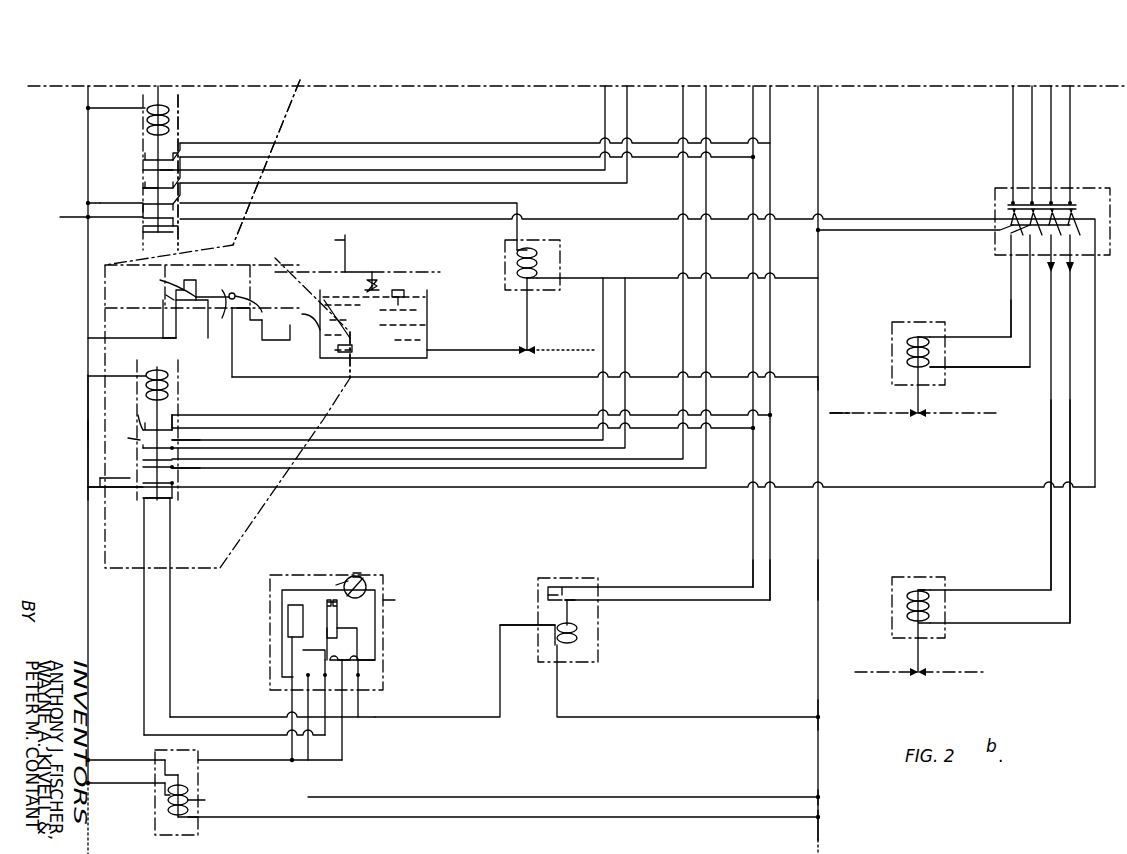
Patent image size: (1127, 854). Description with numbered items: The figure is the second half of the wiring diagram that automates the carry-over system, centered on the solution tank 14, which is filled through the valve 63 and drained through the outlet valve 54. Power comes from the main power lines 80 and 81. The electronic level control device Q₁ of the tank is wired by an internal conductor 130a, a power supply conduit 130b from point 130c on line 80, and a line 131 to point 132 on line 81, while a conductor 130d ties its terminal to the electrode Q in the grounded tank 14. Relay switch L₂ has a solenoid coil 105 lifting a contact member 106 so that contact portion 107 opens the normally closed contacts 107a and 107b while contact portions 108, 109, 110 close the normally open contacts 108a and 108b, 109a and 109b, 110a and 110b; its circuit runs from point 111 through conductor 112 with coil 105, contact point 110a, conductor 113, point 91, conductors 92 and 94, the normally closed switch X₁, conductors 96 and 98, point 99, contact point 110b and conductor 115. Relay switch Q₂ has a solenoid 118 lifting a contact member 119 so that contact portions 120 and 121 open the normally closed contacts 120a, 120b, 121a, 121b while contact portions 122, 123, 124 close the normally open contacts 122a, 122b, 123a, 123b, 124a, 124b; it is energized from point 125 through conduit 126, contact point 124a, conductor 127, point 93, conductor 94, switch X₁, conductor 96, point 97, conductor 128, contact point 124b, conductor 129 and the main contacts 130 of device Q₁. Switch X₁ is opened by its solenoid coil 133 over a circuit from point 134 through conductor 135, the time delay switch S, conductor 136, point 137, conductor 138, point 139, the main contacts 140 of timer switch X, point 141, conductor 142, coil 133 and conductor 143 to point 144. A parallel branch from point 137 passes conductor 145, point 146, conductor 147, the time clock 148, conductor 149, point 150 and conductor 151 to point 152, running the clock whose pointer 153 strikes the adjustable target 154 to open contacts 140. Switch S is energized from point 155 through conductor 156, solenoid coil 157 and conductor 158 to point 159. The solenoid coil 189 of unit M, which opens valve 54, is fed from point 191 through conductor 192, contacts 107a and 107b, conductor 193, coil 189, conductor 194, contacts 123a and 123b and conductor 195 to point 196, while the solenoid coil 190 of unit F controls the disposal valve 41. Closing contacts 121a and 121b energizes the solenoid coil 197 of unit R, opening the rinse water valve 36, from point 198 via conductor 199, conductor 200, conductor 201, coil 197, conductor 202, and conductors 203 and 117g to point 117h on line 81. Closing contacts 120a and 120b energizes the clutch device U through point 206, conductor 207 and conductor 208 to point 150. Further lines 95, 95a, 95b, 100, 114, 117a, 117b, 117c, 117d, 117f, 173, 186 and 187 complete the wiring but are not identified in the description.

The solution tank 14 is at (373, 324).
The wash or teeter water supply valve 36 is at (918, 674).
The effluent disposal valve 41 is at (918, 415).
The outlet valve 54 is at (527, 352).
The valve 63 is at (405, 292).
The main power line 80 is at (88, 430).
The main power line 81 is at (818, 610).
The point 91 is at (770, 143).
The conductor 92 is at (750, 322).
The point 93 is at (770, 415).
The conductor 94 is at (770, 570).
The relay coil 95 is at (565, 648).
The contact 95a is at (578, 603).
The contact 95b is at (553, 600).
The conductor 96 is at (690, 583).
The point 97 is at (753, 428).
The conductor 98 is at (683, 318).
The point 99 is at (753, 157).
The conductor 100 is at (753, 110).
The solenoid coil 105 is at (153, 106).
The contact member 106 is at (160, 105).
The contact portion 107 is at (174, 203).
The normally closed contact 107a is at (142, 214).
The normally closed contact 107b is at (175, 210).
The contact portion 108 is at (158, 234).
The normally open contact 108a is at (143, 228).
The normally open contact 108b is at (175, 226).
The contact portion 109 is at (142, 188).
The normally open contact 109a is at (145, 185).
The normally open contact 109b is at (176, 182).
The contact portion 110 is at (181, 152).
The contact point 110a is at (146, 152).
The contact point 110b is at (176, 150).
The point 111 is at (88, 103).
The conductor 112 is at (95, 107).
The conductor 113 is at (398, 143).
The conductor 114 is at (665, 158).
The conductor 115 is at (178, 104).
The conductor 117a is at (95, 219).
The conductor 117b is at (60, 217).
The conductor 117c is at (405, 221).
The conductor 117d is at (1011, 322).
The conductor 117f is at (945, 370).
The conductor 117g is at (900, 231).
The point 117h is at (818, 232).
The solenoid 118 is at (148, 370).
The contact member 119 is at (168, 372).
The contact portion 120 is at (155, 505).
The normally closed contact 120a is at (143, 502).
The normally closed contact 120b is at (172, 503).
The contact portion 121 is at (175, 498).
The normally closed contact 121a is at (143, 497).
The normally closed contact 121b is at (175, 486).
The contact portion 122 is at (174, 484).
The normally open contact 122a is at (143, 468).
The normally open contact 122b is at (174, 468).
The contact portion 123 is at (143, 460).
The normally open contact 123a is at (143, 447).
The normally open contact 123b is at (174, 446).
The contact portion 124 is at (140, 415).
The contact point 124a is at (143, 422).
The contact point 124b is at (174, 428).
The point 125 is at (88, 375).
The conduit 126 is at (98, 375).
The conductor 127 is at (405, 415).
The conductor 128 is at (668, 428).
The conductor 129 is at (151, 326).
The main contacts 130 is at (196, 280).
The internal conductor 130a is at (263, 297).
The power supply conduit 130b is at (128, 326).
The point 130c is at (88, 338).
The conductor 130d is at (265, 332).
The line 131 is at (665, 377).
The point 132 is at (818, 377).
The solenoid coil 133 is at (555, 640).
The point 134 is at (88, 760).
The conductor 135 is at (138, 745).
The conductor 136 is at (200, 760).
The point 137 is at (292, 760).
The conductor 138 is at (342, 752).
The point 139 is at (340, 675).
The main contacts 140 is at (328, 600).
The point 141 is at (360, 675).
The conductor 142 is at (485, 717).
The conductor 143 is at (722, 717).
The point 144 is at (818, 717).
The conductor 145 is at (292, 735).
The point 146 is at (282, 677).
The conductor 147 is at (285, 620).
The time clock 148 is at (365, 580).
The conductor 149 is at (375, 644).
The point 150 is at (308, 676).
The conductor 151 is at (560, 797).
The point 152 is at (818, 797).
The pointer 153 is at (345, 582).
The adjustable stop or target 154 is at (358, 575).
The point 155 is at (88, 783).
The conductor 156 is at (140, 790).
The solenoid coil 157 is at (207, 796).
The conductor 158 is at (390, 817).
The point 159 is at (818, 817).
The conductor 173 is at (592, 468).
The conductor 186 is at (605, 123).
The conductor 187 is at (548, 183).
The solenoid coil 189 is at (535, 255).
The solenoid coil 190 is at (910, 335).
The point 191 is at (88, 203).
The conductor 192 is at (95, 195).
The conductor 193 is at (368, 203).
The conductor 194 is at (603, 318).
The conductor 195 is at (625, 320).
The point 196 is at (818, 280).
The solenoid coil 197 is at (912, 590).
The point 198 is at (88, 487).
The conductor 199 is at (100, 490).
The conductor 200 is at (498, 487).
The conductor 201 is at (1051, 432).
The conductor 202 is at (1070, 452).
The conductor 203 is at (1008, 241).
The point 206 is at (340, 717).
The conductor 207 is at (144, 625).
The conductor 208 is at (170, 625).